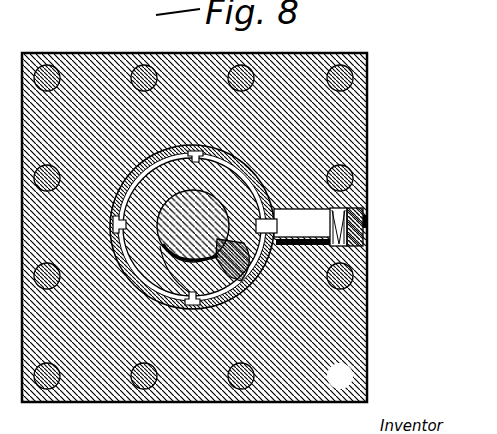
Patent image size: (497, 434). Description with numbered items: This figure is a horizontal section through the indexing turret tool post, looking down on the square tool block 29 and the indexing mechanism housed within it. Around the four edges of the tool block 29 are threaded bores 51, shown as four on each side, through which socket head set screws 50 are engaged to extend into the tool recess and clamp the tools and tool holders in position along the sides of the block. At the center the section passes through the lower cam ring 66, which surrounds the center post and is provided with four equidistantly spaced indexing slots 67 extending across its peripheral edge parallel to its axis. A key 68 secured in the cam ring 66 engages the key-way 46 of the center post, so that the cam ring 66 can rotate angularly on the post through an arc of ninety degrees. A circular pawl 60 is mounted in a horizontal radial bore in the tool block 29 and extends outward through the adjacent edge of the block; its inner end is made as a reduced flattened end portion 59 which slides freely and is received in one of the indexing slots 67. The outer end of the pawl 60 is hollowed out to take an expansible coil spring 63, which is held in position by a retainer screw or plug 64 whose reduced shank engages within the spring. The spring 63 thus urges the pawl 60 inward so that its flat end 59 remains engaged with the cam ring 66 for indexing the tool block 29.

The tool block 29 is at (368, 121).
The key-way 46 is at (175, 292).
The socket head set screws 50 is at (338, 72).
The threaded bores 51 is at (57, 72).
The reduced flattened end portion 59 is at (352, 253).
The circular pawl 60 is at (293, 223).
The expansible coil spring 63 is at (364, 233).
The retainer screw or plug 64 is at (363, 218).
The lower cam ring 66 is at (212, 158).
The indexing slots 67 is at (195, 150).
The key 68 is at (246, 272).